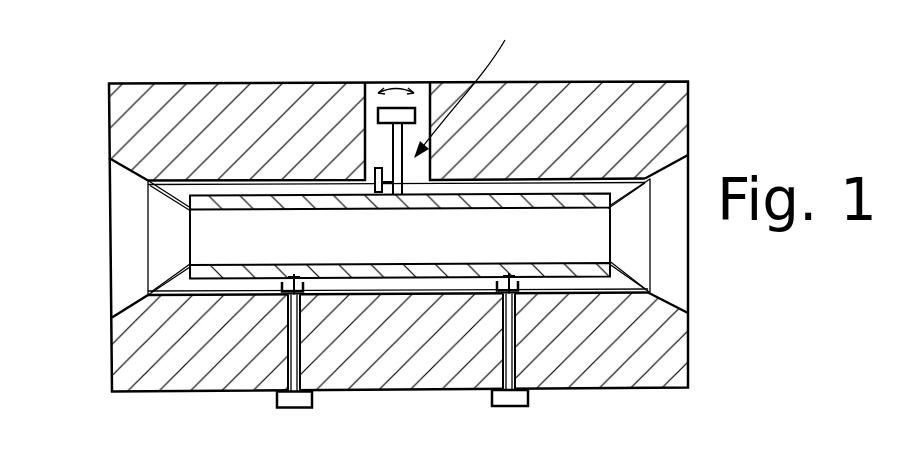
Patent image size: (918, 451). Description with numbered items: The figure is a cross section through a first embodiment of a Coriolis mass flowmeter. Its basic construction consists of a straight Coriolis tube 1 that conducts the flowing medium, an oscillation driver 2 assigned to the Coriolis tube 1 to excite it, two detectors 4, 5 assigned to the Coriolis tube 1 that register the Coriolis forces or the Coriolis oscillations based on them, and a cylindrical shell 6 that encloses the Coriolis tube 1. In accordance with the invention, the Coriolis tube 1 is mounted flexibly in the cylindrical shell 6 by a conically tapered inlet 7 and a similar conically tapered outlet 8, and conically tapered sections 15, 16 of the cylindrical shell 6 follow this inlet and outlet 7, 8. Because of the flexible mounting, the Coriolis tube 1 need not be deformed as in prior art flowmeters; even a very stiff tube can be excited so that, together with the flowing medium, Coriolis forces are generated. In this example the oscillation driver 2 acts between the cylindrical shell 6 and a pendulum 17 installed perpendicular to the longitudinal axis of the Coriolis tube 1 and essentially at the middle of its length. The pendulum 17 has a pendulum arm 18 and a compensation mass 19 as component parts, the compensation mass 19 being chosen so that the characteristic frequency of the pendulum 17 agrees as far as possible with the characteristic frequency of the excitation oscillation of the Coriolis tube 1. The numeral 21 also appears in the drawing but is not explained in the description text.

The Coriolis tube 1 is at (580, 267).
The oscillation driver 2 is at (377, 167).
The detector 4 is at (300, 292).
The detector 5 is at (497, 288).
The cylindrical shell 6 is at (567, 107).
The conically tapered inlet 7 is at (175, 196).
The conically tapered outlet 8 is at (633, 190).
The conically tapered section 15 is at (125, 170).
The conically tapered section 16 is at (687, 163).
The pendulum 17 is at (473, 85).
The pendulum arm 18 is at (405, 182).
The compensation mass 19 is at (380, 113).
The foot 21 is at (334, 422).